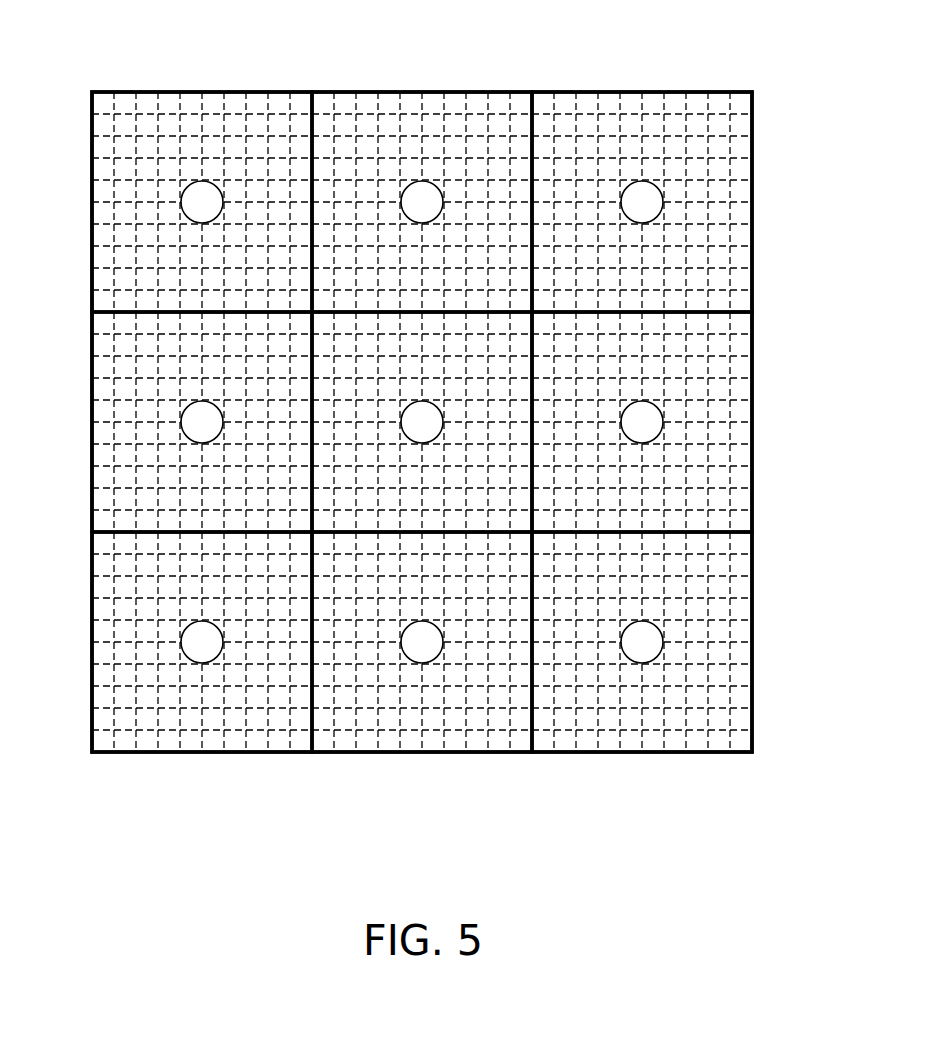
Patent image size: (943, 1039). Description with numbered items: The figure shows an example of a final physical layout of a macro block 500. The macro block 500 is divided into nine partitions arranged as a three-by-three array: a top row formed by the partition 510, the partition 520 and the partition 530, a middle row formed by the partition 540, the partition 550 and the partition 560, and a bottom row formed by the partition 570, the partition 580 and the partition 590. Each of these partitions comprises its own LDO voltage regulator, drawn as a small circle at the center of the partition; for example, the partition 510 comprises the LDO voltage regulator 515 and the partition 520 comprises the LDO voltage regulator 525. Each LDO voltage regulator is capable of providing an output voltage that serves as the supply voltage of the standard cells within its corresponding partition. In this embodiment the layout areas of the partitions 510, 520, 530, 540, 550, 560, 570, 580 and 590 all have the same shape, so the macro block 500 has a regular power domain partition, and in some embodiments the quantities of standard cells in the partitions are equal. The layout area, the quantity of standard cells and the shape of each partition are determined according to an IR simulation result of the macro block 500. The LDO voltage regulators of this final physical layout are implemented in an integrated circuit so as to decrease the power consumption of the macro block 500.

The macro block 500 is at (747, 862).
The partition 510 is at (202, 169).
The LDO voltage regulator 515 is at (223, 186).
The partition 520 is at (422, 169).
The LDO voltage regulator 525 is at (443, 185).
The partition 530 is at (630, 92).
The partition 540 is at (92, 412).
The partition 550 is at (345, 535).
The partition 560 is at (753, 410).
The partition 570 is at (193, 752).
The partition 580 is at (413, 752).
The partition 590 is at (633, 752).